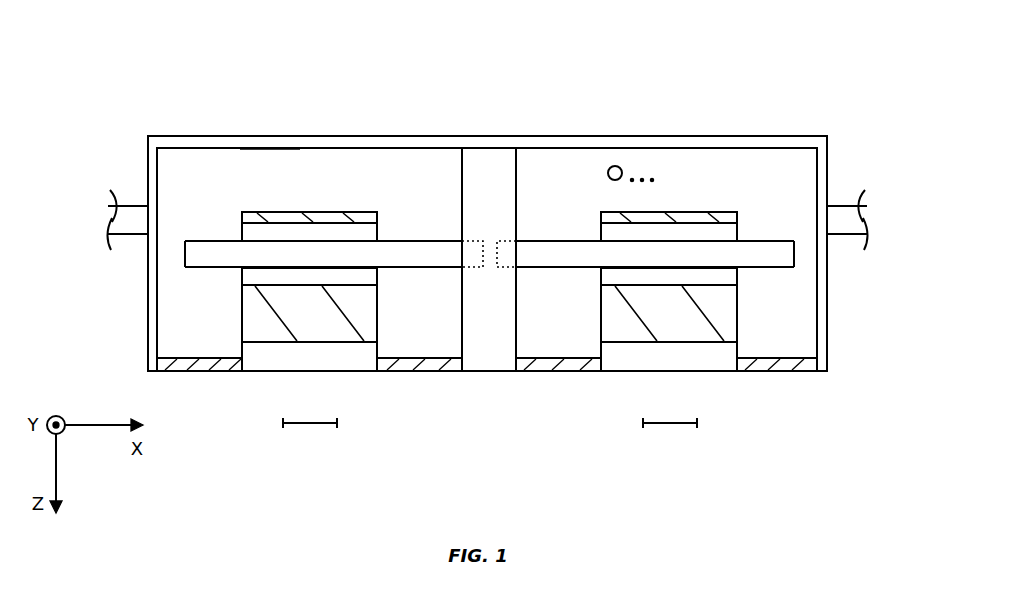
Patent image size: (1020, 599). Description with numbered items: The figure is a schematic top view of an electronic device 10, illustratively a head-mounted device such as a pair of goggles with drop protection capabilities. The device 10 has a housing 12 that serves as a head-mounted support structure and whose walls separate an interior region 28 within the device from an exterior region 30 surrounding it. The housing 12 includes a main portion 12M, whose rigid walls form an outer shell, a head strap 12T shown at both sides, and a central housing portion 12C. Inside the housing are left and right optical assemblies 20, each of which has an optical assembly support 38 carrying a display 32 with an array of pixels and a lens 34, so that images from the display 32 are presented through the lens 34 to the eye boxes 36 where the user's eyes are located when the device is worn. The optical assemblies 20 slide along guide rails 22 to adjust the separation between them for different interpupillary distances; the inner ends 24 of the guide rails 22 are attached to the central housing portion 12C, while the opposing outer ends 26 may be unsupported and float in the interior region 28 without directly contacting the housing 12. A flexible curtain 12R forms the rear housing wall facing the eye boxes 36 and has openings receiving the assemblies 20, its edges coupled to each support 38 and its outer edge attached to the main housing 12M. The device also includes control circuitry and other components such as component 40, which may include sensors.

The device 10 is at (223, 56).
The exterior region 30 is at (107, 91).
The housing 12 is at (846, 165).
The main portion 12M is at (805, 146).
The central housing portion 12C is at (489, 157).
The curtain 12R is at (203, 372).
The head strap 12T is at (108, 218).
The interior region 28 is at (268, 157).
The optical assemblies 20 is at (445, 221).
The guide rails 22 is at (413, 248).
The inner ends 24 is at (470, 270).
The outer ends 26 is at (490, 287).
The display 32 is at (320, 212).
The lens 34 is at (242, 318).
The eye boxes 36 is at (310, 425).
The optical assembly support 38 is at (242, 278).
The component 40 is at (615, 165).